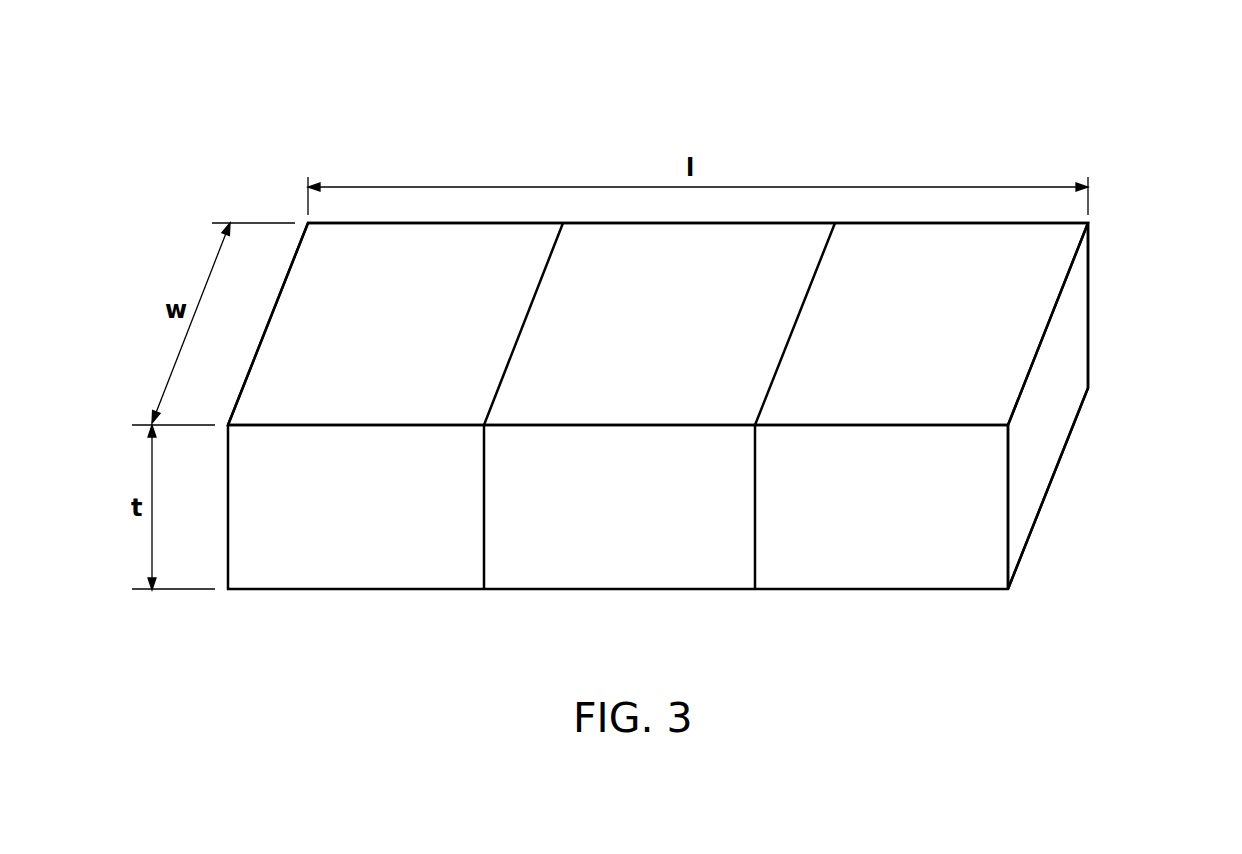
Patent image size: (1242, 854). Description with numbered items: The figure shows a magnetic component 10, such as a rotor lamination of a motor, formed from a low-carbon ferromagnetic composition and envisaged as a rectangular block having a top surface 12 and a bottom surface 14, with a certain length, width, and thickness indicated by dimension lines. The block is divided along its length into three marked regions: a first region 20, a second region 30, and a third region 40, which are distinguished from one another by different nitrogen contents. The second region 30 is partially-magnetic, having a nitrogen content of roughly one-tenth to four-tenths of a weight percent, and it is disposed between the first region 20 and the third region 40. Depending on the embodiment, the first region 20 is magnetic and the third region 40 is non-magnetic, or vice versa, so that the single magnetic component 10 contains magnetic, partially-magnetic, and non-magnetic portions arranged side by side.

The magnetic component 10 is at (1123, 90).
The top surface 12 is at (1005, 325).
The bottom surface 14 is at (1048, 488).
The first region 20 is at (413, 328).
The second region 30 is at (663, 328).
The third region 40 is at (922, 328).